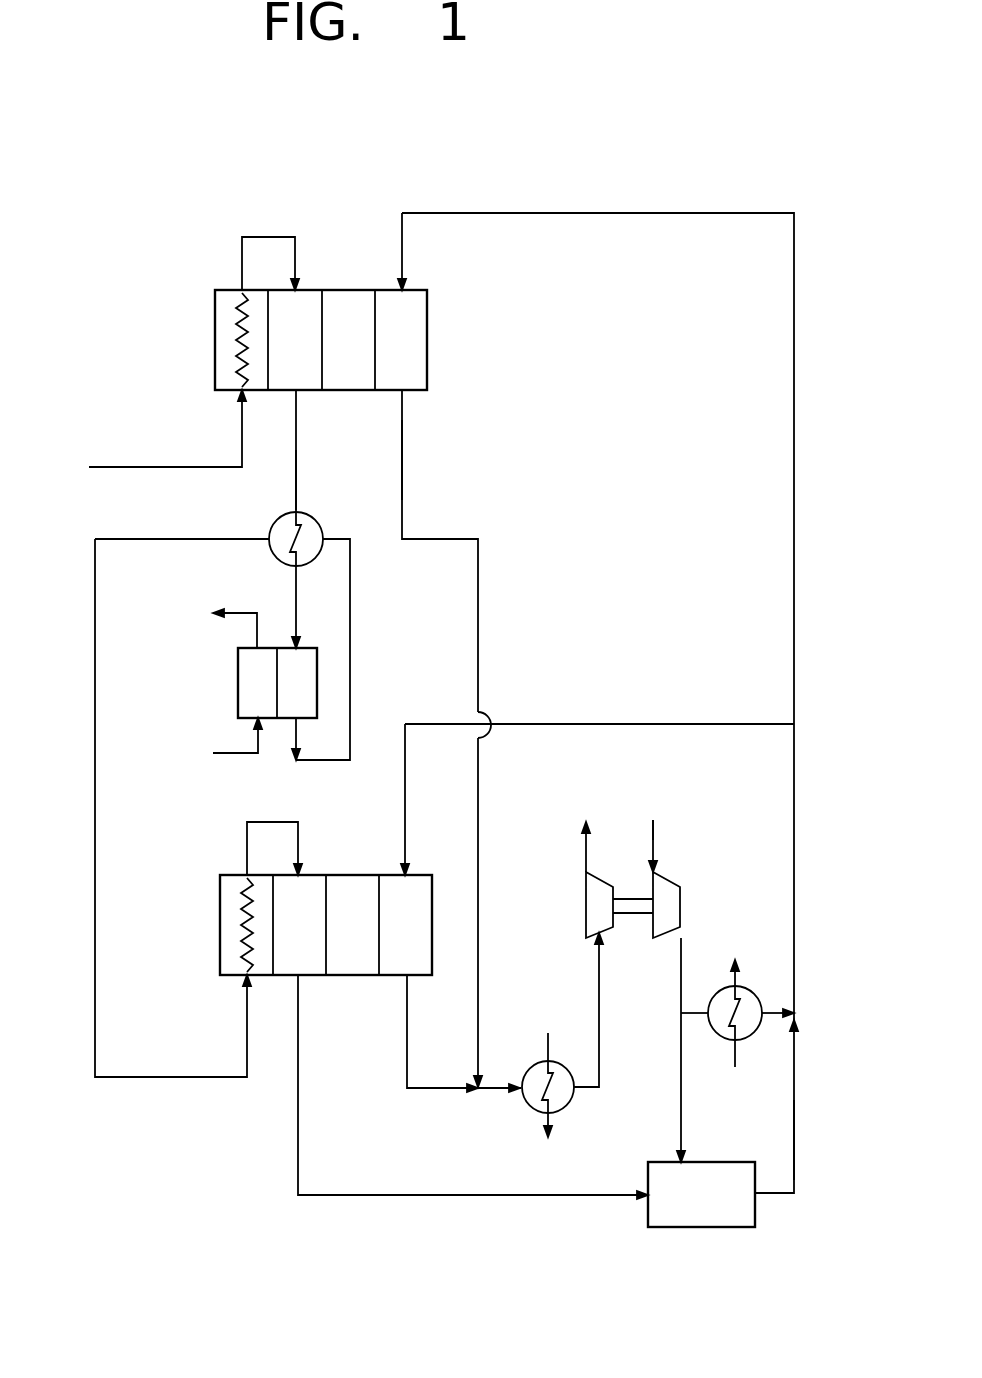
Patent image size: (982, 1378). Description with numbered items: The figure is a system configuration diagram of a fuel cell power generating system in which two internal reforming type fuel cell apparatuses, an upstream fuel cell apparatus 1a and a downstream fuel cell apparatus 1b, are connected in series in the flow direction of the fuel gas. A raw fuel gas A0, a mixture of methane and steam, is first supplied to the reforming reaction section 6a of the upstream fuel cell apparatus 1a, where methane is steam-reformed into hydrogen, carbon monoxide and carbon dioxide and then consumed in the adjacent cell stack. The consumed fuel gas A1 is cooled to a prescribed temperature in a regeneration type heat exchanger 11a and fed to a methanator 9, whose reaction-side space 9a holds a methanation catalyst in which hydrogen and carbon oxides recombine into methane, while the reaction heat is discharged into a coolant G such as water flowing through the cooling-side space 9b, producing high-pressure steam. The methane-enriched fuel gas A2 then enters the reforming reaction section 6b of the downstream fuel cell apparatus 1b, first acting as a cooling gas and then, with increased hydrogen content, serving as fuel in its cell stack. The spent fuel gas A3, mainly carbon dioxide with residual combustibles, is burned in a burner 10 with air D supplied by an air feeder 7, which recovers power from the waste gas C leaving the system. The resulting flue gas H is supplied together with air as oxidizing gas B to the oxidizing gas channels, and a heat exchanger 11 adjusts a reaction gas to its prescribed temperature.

The upstream fuel cell apparatus 1a is at (395, 197).
The downstream fuel cell apparatus 1b is at (420, 1055).
The reforming reaction section of upstream fuel cell apparatus 6a is at (215, 338).
The reforming reaction section of downstream fuel cell apparatus 6b is at (220, 933).
The air feeder 7 is at (683, 890).
The methanator 9 is at (300, 692).
The reaction-side space 9a is at (320, 680).
The cooling-side space 9b is at (238, 702).
The burner 10 is at (662, 1230).
The heat exchanger 11 is at (710, 1037).
The regeneration type heat exchanger 11a is at (322, 533).
The raw fuel gas A0 is at (138, 465).
The fuel gas A1 is at (293, 498).
The fuel gas A2 is at (187, 1078).
The fuel gas A3 is at (348, 1198).
The oxidizing gas B is at (403, 465).
The waste gas C is at (583, 853).
The air D is at (657, 828).
The coolant G is at (203, 752).
The flue gas H is at (797, 1125).